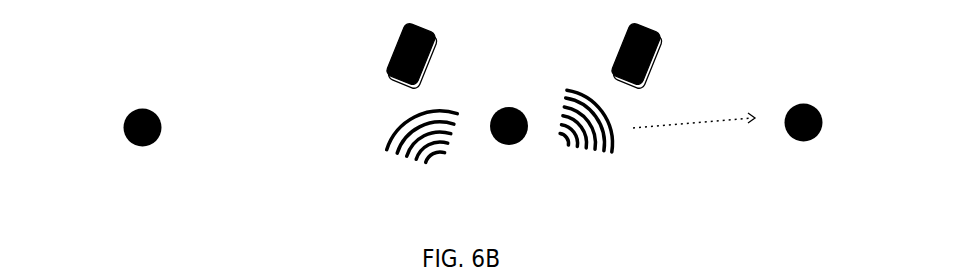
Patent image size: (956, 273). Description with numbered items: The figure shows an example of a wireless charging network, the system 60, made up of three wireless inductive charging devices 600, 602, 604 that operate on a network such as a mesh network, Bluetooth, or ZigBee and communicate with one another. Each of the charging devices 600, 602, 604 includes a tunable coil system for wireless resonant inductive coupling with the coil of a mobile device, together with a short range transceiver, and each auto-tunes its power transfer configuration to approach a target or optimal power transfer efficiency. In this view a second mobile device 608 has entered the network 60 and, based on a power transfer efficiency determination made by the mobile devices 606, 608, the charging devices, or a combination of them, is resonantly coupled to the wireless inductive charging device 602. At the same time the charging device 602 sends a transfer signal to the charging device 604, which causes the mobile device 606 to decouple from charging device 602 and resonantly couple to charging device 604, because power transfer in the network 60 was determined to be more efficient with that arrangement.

The system/network 60 is at (81, 87).
The wireless inductive charging device 600 is at (145, 154).
The wireless inductive charging device 602 is at (516, 156).
The wireless inductive charging device 604 is at (802, 153).
The mobile device 606 is at (672, 52).
The second mobile device 608 is at (444, 52).